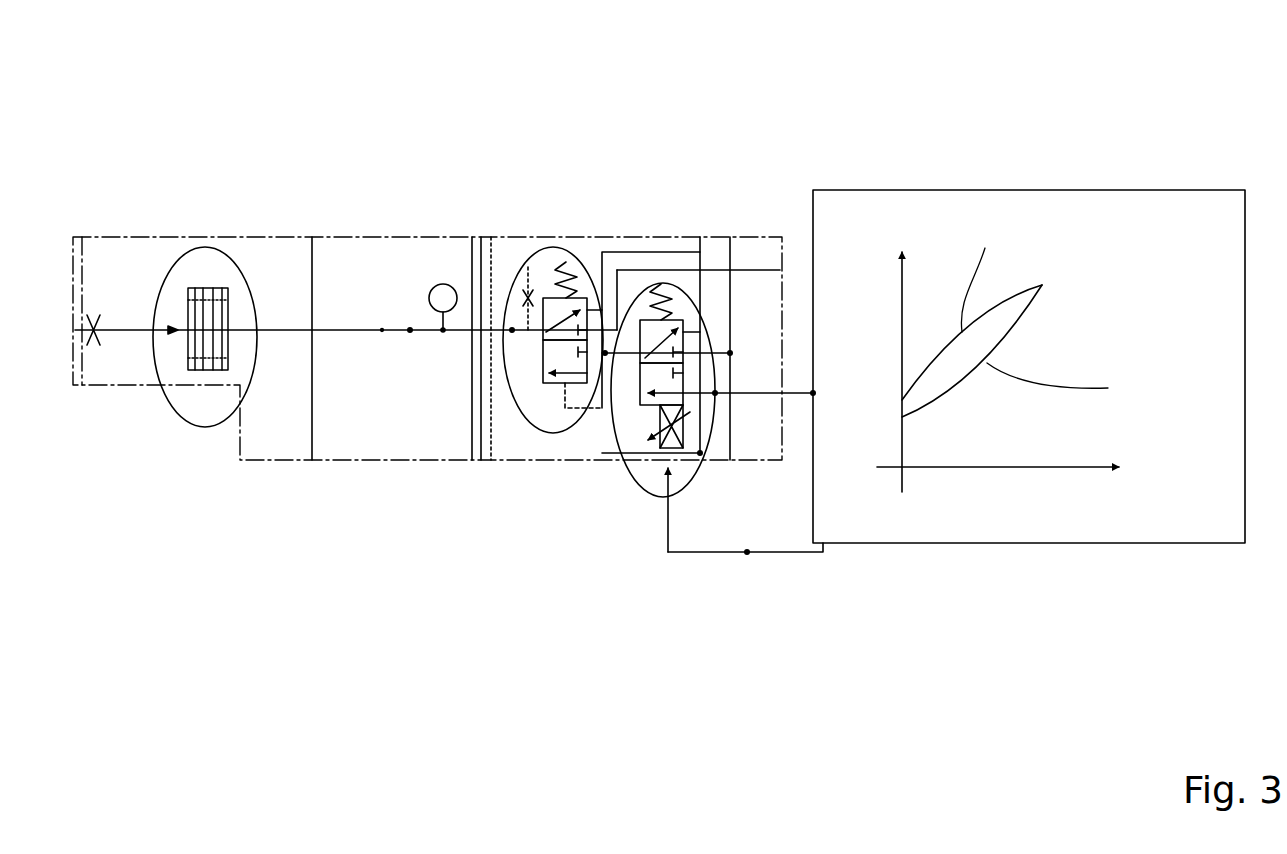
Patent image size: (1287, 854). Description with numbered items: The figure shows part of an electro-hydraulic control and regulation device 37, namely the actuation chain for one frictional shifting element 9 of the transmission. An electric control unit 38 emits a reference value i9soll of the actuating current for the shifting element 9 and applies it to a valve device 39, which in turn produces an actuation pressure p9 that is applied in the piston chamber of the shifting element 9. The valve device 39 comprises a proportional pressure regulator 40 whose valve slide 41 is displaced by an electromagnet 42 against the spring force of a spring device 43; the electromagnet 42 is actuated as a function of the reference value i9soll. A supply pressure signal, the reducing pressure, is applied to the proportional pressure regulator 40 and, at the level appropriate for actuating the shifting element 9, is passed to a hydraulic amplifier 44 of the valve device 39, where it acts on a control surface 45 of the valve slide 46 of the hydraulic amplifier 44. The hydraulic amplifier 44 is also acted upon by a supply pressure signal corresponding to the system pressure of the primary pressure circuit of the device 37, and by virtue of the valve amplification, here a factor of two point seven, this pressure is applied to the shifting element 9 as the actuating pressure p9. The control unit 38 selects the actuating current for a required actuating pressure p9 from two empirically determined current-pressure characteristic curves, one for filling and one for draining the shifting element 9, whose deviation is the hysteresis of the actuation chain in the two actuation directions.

The frictional shifting element 9 is at (205, 372).
The electro-hydraulic control and regulation device 37 is at (342, 513).
The electric control unit 38 is at (982, 190).
The valve device 39 is at (614, 224).
The proportional pressure regulator 40 is at (657, 465).
The valve slide 41 is at (640, 402).
The electromagnet 42 is at (672, 440).
The spring device 43 is at (632, 390).
The hydraulic amplifier 44 is at (447, 390).
The control surface 45 is at (558, 385).
The valve slide 46 is at (557, 345).
The actuation pressure p9 is at (382, 330).
The reference value of the actuating current i9soll is at (747, 553).